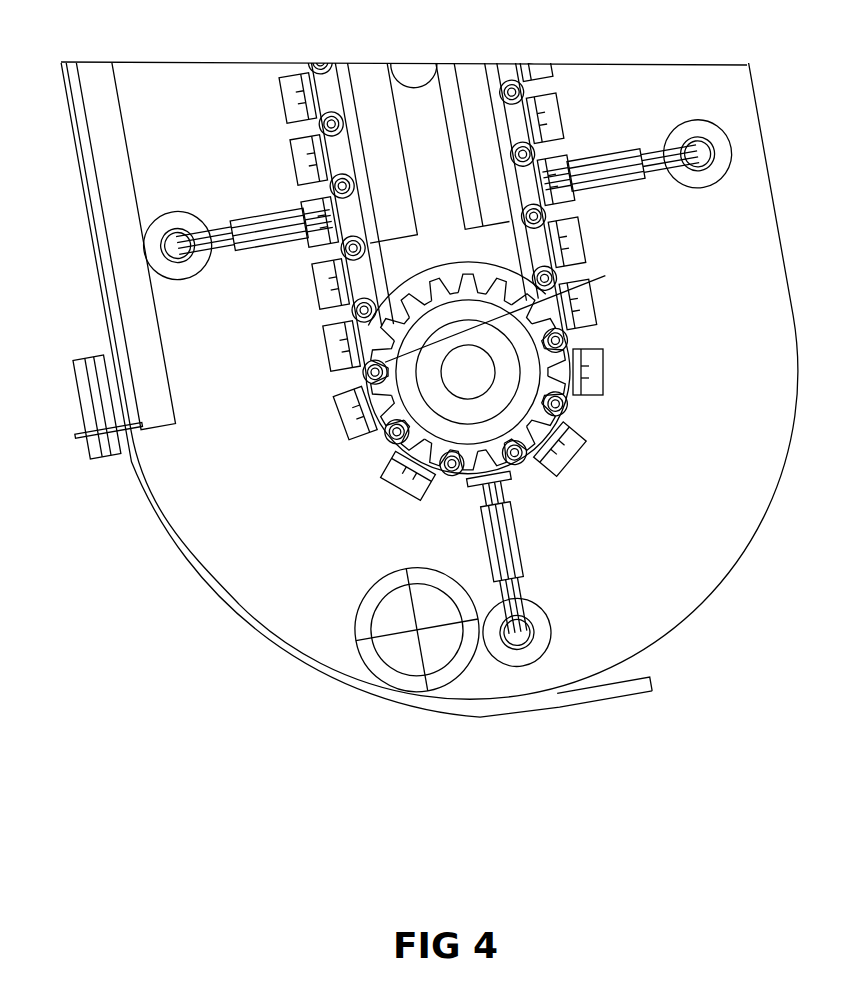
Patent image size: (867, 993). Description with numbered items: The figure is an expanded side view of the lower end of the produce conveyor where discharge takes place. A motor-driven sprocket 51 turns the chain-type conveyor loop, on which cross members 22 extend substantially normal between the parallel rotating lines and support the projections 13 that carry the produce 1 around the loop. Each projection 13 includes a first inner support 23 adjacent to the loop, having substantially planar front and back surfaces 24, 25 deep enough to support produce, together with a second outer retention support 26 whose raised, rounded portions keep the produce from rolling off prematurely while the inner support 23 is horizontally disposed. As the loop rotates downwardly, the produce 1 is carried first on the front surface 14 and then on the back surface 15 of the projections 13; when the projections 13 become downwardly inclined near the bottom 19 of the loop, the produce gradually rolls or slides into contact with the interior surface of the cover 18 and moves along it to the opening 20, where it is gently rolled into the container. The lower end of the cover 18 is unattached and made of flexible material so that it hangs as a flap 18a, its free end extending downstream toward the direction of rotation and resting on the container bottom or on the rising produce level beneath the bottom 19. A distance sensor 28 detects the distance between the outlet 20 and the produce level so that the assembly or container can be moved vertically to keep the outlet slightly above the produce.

The produce 1 is at (392, 617).
The projections 13 is at (692, 197).
The front surface 14 is at (618, 153).
The back surface 15 is at (623, 190).
The cover 18 is at (110, 256).
The flap 18a is at (287, 650).
The bottom 19 is at (633, 622).
The opening 20 is at (648, 663).
The cross members 22 is at (352, 418).
The first inner support 23 is at (497, 512).
The front surface 24 is at (513, 532).
The back surface 25 is at (483, 547).
The second outer retention support 26 is at (530, 605).
The distance sensor 28 is at (78, 400).
The sprocket 51 is at (397, 332).